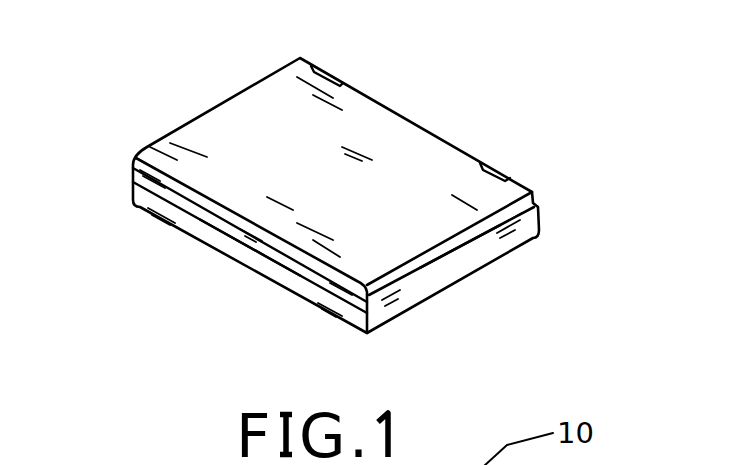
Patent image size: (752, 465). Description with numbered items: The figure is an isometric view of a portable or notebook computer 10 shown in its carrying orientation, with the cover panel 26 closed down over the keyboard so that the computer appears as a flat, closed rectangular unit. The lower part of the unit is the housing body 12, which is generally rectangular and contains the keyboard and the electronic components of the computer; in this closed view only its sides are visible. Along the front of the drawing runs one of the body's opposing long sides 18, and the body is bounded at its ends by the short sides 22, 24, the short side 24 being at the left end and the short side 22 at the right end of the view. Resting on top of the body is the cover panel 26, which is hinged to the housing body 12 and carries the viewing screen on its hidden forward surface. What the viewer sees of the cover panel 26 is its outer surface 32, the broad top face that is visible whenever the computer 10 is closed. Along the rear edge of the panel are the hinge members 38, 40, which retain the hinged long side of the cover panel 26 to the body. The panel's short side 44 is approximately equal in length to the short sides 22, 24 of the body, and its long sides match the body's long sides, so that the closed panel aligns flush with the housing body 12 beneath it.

The portable computer 10 is at (460, 90).
The housing body 12 is at (298, 304).
The long side 18 is at (252, 247).
The short side 22 is at (427, 290).
The short side 24 is at (180, 128).
The cover panel 26 is at (220, 90).
The outer surface 32 is at (432, 153).
The hinge member 38 is at (504, 176).
The hinge member 40 is at (327, 77).
The short side 44 is at (460, 248).